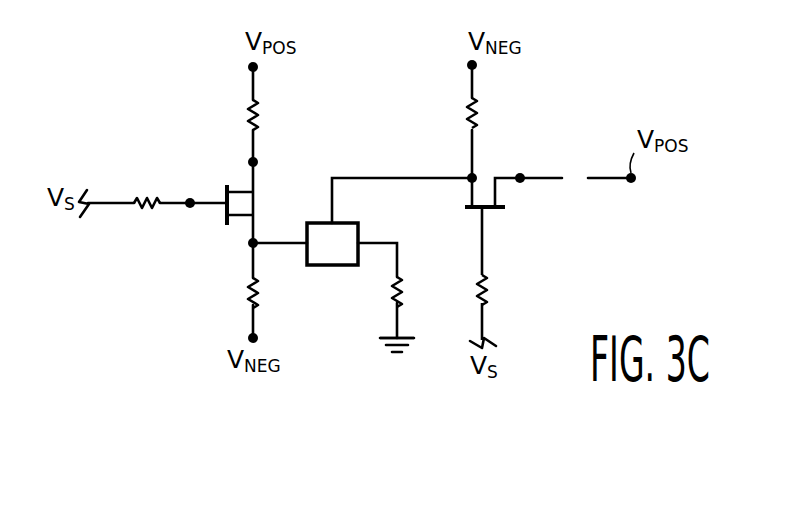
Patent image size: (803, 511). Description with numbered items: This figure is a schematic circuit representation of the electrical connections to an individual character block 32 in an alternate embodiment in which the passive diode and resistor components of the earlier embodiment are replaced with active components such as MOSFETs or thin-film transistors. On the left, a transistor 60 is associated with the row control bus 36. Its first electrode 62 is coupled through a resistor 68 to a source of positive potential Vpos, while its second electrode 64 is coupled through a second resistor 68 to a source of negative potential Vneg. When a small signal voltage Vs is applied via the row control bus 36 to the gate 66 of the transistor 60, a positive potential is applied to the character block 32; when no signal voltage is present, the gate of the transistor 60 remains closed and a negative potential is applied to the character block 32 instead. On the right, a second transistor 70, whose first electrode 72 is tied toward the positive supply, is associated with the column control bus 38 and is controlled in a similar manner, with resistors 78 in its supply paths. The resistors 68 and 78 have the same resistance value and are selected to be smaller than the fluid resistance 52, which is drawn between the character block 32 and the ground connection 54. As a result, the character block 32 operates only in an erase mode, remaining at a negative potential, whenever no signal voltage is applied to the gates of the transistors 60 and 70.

The transistor 60 is at (229, 171).
The resistor 68 is at (257, 110).
The first electrode 62 is at (258, 162).
The second electrode 64 is at (256, 240).
The row control bus 36 is at (108, 206).
The gate 66 is at (190, 208).
The character block 32 is at (345, 256).
The fluid resistance 52 is at (393, 288).
The ground 54 is at (388, 338).
The resistor 78 is at (468, 112).
The first electrode 72 is at (520, 174).
The transistor 70 is at (513, 193).
The column control bus 38 is at (486, 326).